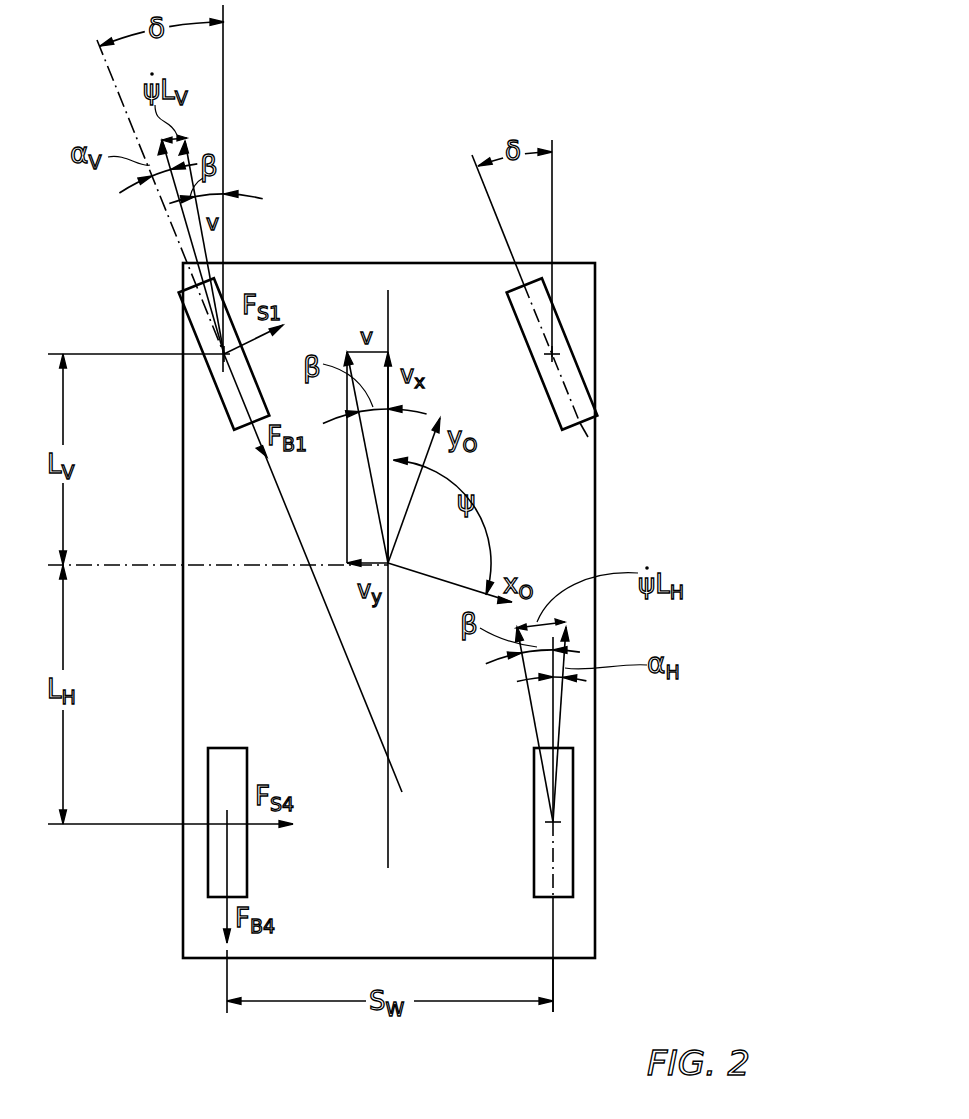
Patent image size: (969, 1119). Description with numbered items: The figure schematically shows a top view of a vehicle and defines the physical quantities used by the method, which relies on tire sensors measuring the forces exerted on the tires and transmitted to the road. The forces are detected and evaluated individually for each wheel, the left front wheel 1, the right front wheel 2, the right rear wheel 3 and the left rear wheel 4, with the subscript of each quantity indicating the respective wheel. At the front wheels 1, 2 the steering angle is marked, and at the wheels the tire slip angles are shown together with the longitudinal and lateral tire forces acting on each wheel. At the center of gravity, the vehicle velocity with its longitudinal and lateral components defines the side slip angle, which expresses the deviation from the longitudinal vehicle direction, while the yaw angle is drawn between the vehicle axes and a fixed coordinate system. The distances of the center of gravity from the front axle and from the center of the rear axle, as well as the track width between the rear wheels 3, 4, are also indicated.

The left front wheel 1 is at (200, 309).
The right front wheel 2 is at (580, 393).
The right rear wheel 3 is at (563, 885).
The left rear wheel 4 is at (217, 885).